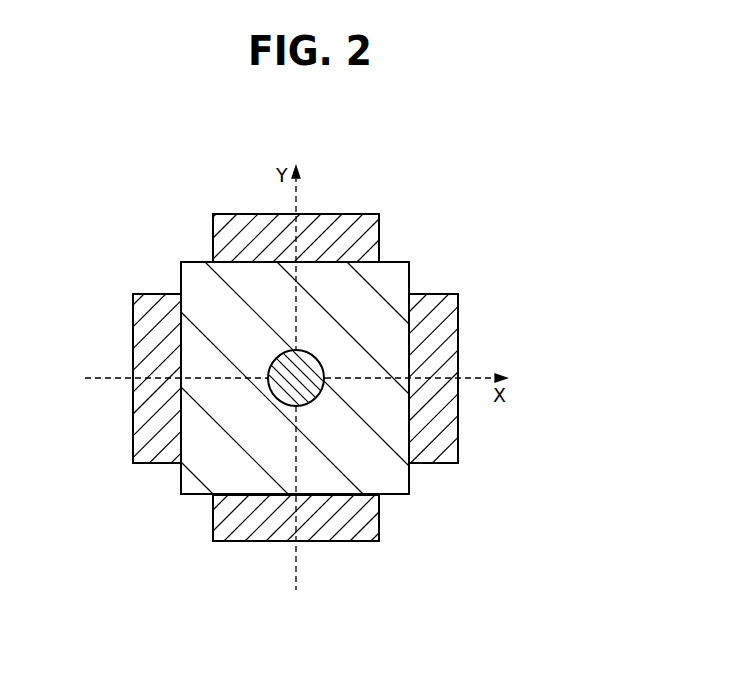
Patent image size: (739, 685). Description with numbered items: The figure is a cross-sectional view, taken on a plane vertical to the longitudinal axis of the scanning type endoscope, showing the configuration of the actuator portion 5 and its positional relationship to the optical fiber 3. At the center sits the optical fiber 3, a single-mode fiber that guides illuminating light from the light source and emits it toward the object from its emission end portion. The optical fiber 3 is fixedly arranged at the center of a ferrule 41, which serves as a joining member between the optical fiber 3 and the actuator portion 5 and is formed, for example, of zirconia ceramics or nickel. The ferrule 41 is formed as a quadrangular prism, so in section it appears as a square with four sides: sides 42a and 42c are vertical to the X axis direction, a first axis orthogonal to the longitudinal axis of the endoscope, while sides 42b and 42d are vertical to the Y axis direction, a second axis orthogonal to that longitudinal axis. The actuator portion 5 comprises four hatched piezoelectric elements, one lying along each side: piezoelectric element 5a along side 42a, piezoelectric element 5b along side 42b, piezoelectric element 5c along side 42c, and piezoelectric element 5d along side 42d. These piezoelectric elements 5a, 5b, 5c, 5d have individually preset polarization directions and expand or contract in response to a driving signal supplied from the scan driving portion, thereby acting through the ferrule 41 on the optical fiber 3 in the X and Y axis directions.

The optical fiber 3 is at (313, 353).
The ferrule 41 is at (390, 278).
The side 42a is at (410, 478).
The side 42b is at (200, 262).
The side 42c is at (181, 274).
The side 42d is at (397, 496).
The actuator portion 5 is at (292, 380).
The piezoelectric element 5a is at (458, 315).
The piezoelectric element 5b is at (380, 214).
The piezoelectric element 5c is at (133, 441).
The piezoelectric element 5d is at (213, 542).